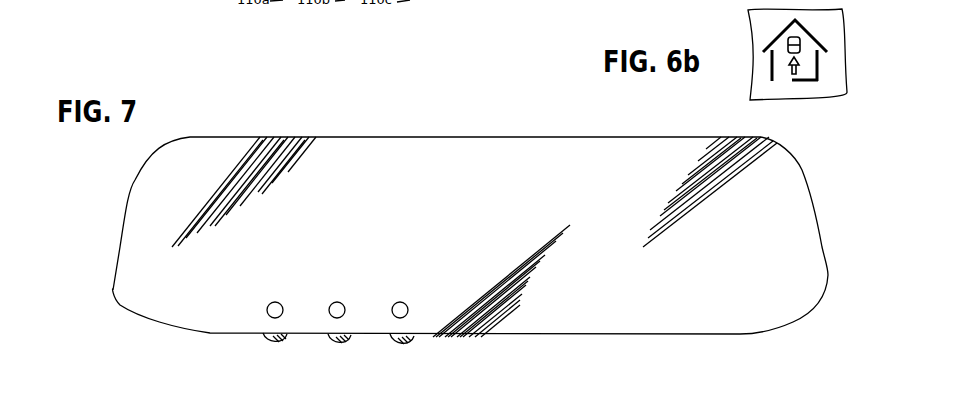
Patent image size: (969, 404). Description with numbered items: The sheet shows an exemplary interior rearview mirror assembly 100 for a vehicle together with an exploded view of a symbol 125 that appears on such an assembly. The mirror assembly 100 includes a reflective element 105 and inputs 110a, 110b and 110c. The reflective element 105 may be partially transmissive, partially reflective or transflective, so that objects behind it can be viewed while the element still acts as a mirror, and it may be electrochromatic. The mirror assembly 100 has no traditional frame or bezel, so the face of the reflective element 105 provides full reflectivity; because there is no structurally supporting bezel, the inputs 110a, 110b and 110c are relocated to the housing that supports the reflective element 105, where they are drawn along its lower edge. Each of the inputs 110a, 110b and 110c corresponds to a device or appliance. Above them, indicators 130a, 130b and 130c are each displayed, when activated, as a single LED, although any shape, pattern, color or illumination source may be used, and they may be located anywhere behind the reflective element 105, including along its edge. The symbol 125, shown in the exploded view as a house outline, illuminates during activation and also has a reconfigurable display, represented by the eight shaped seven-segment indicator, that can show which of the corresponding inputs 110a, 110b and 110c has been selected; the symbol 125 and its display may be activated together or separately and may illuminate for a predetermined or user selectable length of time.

In FIG. 7, the interior rearview mirror assembly 100 is at (830, 213).
In FIG. 7, the reflective element 105 is at (492, 220).
In FIG. 7, the input 110a is at (274, 342).
In FIG. 7, the input 110b is at (335, 343).
In FIG. 7, the input 110c is at (399, 343).
In FIG. 6b, the symbol 125 is at (780, 34).
In FIG. 7, the indicator 130a is at (285, 305).
In FIG. 7, the indicator 130b is at (348, 305).
In FIG. 7, the indicator 130c is at (411, 305).